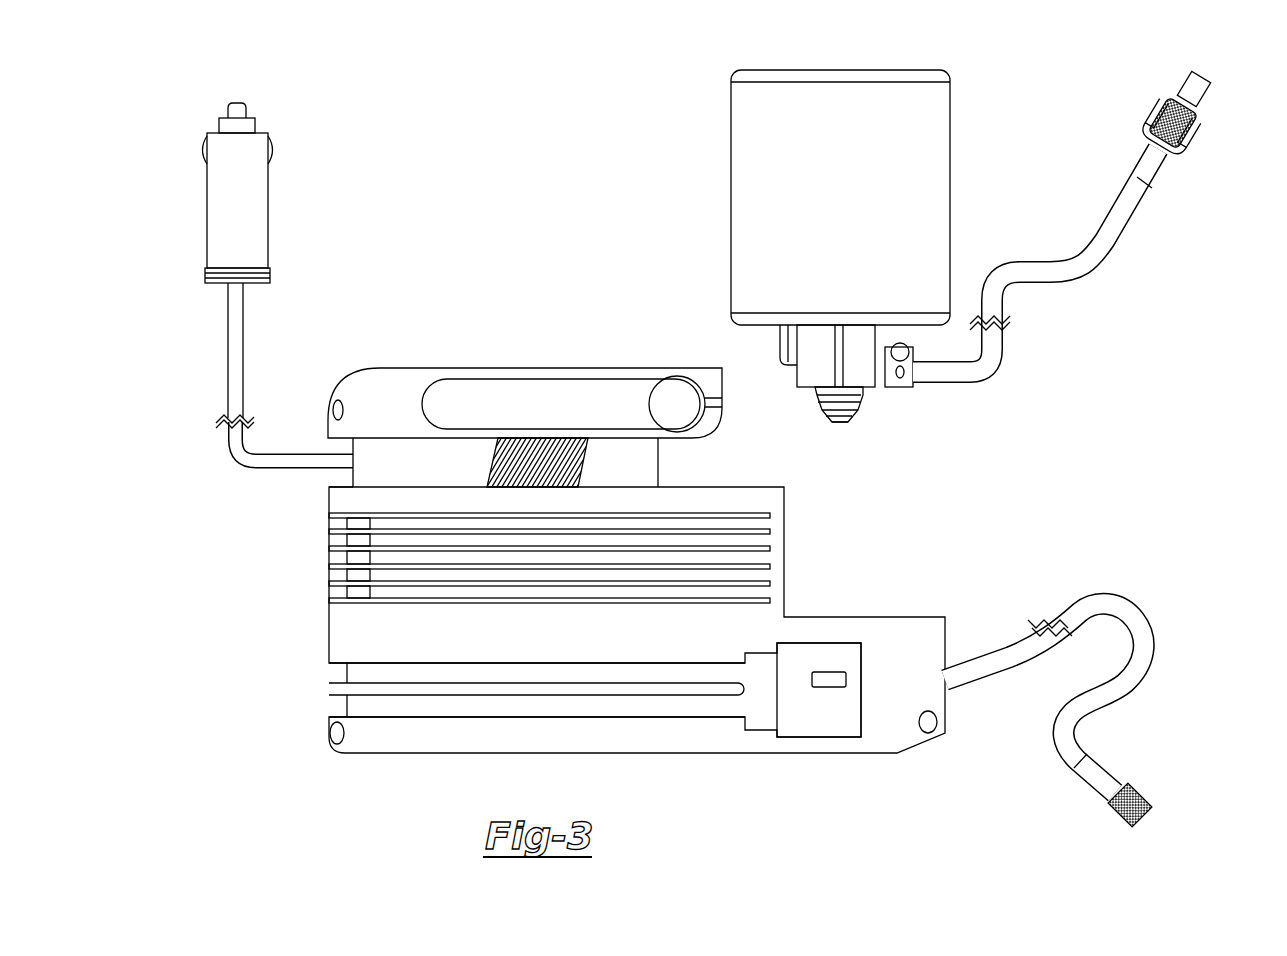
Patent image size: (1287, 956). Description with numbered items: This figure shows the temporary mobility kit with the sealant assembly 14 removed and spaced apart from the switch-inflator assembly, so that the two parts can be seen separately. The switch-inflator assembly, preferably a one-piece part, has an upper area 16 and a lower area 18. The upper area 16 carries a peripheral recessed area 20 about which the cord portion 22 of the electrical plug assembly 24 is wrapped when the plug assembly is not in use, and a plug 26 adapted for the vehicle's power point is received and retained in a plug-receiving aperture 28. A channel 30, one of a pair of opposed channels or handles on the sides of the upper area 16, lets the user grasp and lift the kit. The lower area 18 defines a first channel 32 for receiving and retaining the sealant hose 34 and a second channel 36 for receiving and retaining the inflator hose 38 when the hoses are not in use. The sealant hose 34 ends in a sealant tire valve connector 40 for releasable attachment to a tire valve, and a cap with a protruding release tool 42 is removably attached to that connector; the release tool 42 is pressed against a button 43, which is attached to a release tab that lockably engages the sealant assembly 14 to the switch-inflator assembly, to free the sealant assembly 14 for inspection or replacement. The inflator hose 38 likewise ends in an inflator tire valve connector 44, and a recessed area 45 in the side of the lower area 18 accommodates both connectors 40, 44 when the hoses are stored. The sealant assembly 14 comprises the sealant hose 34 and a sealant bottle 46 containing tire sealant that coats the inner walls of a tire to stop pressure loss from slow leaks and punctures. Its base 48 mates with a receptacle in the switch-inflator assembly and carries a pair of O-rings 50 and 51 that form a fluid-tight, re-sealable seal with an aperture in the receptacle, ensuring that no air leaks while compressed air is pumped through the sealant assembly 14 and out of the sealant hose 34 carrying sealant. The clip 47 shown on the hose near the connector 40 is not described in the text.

The sealant assembly 14 is at (935, 132).
The sealant bottle 46 is at (748, 136).
The upper area 16 is at (332, 508).
The lower area 18 is at (342, 628).
The peripheral recessed area 20 is at (330, 486).
The cord portion 22 is at (240, 302).
The electrical plug assembly 24 is at (230, 378).
The plug 26 is at (244, 205).
The plug-receiving aperture 28 is at (678, 388).
The channel 30 is at (455, 396).
The first channel 32 is at (340, 666).
The sealant hose 34 is at (1068, 284).
The second channel 36 is at (345, 706).
The inflator hose 38 is at (1007, 652).
The sealant tire valve connector 40 is at (1198, 138).
The release tool 42 is at (1197, 86).
The button 43 is at (828, 688).
The inflator tire valve connector 44 is at (1143, 792).
The recessed area 45 is at (758, 708).
The clip 47 is at (1152, 108).
The base 48 is at (812, 380).
The O-ring 50 is at (866, 402).
The O-ring 51 is at (836, 418).